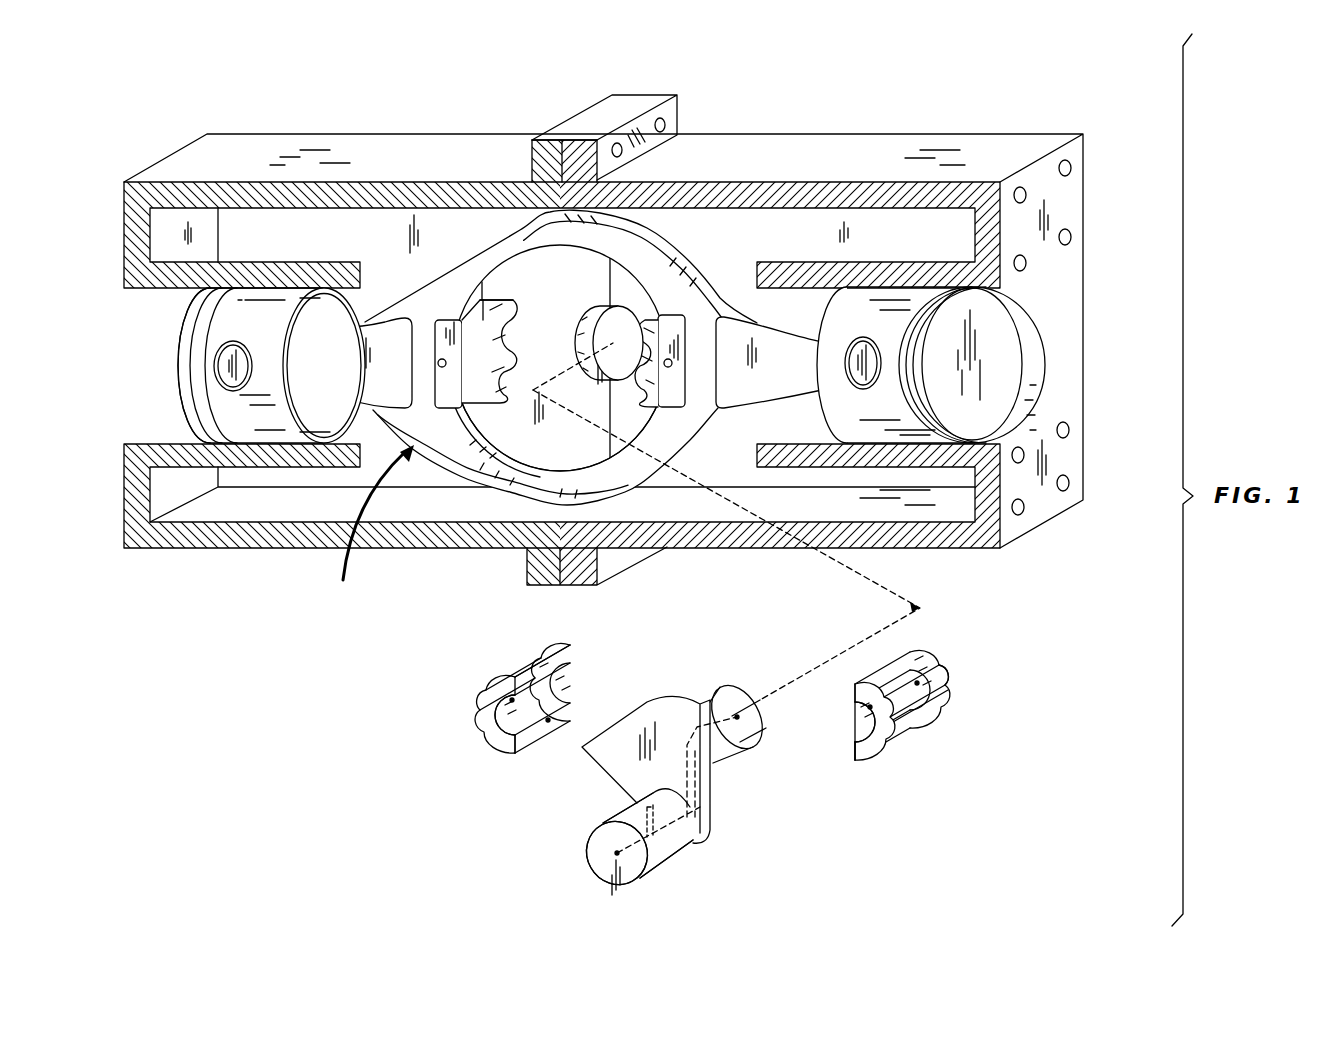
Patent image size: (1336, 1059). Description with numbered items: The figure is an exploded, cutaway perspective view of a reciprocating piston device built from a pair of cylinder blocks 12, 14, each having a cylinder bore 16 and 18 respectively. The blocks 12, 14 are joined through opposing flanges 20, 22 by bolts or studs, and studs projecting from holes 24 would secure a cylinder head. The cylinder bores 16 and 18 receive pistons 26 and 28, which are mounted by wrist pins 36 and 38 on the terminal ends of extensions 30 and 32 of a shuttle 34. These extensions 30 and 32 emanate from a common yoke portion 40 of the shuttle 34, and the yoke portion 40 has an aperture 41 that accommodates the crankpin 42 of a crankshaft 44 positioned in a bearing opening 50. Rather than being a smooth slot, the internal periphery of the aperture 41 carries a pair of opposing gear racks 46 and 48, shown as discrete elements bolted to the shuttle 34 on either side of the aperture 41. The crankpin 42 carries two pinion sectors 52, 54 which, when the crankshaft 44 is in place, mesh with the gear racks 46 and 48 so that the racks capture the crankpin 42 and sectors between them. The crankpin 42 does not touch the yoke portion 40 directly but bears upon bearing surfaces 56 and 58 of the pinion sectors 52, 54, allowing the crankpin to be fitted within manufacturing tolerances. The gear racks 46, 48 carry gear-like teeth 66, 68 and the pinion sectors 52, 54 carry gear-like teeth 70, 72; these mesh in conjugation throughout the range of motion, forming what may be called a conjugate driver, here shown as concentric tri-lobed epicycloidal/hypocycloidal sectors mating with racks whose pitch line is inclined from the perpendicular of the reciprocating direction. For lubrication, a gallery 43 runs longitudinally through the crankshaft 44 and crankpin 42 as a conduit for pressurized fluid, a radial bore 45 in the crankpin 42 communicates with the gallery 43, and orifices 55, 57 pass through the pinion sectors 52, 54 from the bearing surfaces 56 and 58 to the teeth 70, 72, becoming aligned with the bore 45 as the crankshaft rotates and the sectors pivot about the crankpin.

The cylinder block 12 is at (966, 153).
The cylinder block 14 is at (293, 150).
The cylinder bore 16 is at (1028, 320).
The cylinder bore 18 is at (160, 310).
The flange 20 is at (660, 105).
The flange 22 is at (607, 108).
The holes 24 is at (1072, 237).
The piston 26 is at (985, 378).
The piston 28 is at (230, 415).
The extension 30 is at (743, 317).
The extension 32 is at (370, 320).
The shuttle 34 is at (367, 529).
The wrist pin 36 is at (867, 337).
The wrist pin 38 is at (222, 370).
The yoke portion 40 is at (677, 260).
The aperture 41 is at (527, 453).
The crankpin 42 is at (600, 870).
The gallery 43 is at (678, 823).
The crankshaft 44 is at (740, 672).
The bore 45 is at (645, 812).
The gear rack 46 is at (657, 397).
The gear rack 48 is at (446, 402).
The bearing opening 50 is at (685, 320).
The pinion sector 52 is at (950, 658).
The pinion sector 54 is at (515, 665).
The orifice 55 is at (890, 735).
The bearing surface 56 is at (855, 717).
The orifice 57 is at (535, 720).
The bearing surface 58 is at (548, 735).
The gear-like teeth 66 is at (621, 323).
The gear-like teeth 68 is at (518, 320).
The gear-like teeth 70 is at (957, 697).
The gear-like teeth 72 is at (548, 648).